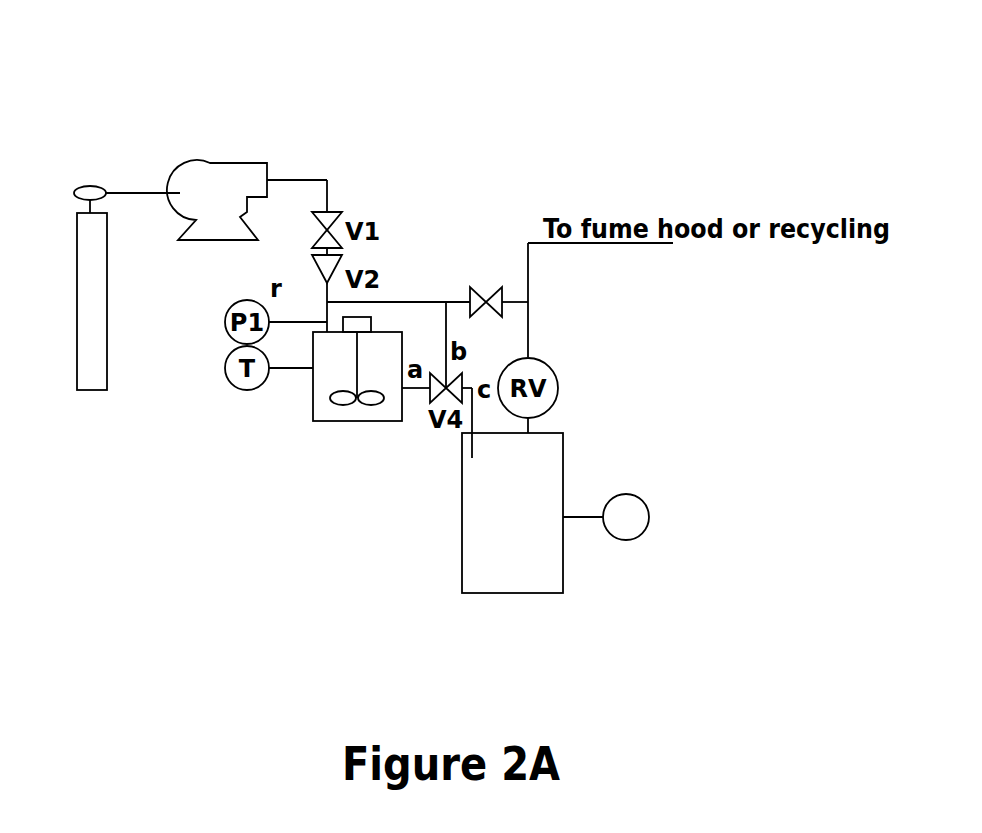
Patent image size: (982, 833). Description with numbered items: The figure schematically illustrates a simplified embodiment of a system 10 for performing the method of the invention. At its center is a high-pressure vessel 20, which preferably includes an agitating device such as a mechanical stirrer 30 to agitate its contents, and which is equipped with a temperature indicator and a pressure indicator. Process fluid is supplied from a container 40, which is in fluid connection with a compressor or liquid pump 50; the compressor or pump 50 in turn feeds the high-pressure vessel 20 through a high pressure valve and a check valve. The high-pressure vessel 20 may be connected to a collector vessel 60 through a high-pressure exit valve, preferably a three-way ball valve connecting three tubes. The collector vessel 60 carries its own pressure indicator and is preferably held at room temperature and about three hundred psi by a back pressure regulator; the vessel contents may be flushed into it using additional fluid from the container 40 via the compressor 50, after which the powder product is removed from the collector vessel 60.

The system 10 is at (475, 100).
The high-pressure vessel 20 is at (313, 405).
The mechanical stirrer 30 is at (376, 405).
The container 40 is at (77, 363).
The compressor or liquid pump 50 is at (228, 164).
The collector vessel 60 is at (510, 593).